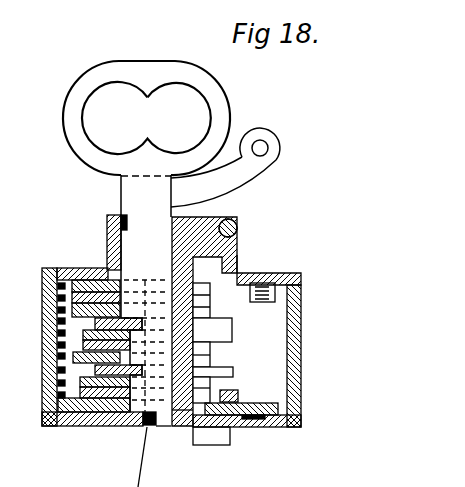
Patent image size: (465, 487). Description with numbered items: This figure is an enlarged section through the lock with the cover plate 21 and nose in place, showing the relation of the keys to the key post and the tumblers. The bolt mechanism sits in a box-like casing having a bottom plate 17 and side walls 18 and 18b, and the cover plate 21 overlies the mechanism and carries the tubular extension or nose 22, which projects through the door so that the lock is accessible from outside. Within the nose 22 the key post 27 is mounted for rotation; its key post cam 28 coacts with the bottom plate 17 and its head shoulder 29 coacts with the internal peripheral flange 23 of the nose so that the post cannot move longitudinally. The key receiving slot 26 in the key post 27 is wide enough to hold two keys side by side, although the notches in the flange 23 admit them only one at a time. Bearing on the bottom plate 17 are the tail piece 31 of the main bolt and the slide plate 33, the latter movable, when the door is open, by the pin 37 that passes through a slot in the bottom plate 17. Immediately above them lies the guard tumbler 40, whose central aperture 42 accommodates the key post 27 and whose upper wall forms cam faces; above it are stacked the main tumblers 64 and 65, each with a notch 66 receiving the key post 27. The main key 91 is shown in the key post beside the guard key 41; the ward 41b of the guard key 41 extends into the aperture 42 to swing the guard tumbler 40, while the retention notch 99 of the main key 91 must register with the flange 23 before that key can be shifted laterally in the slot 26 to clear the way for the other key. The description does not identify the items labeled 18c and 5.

The main key 91 is at (130, 196).
The retention notch 99 is at (128, 221).
The guard key 41 is at (248, 179).
The key ward of guard key 41b is at (140, 400).
The side wall 18 is at (42, 334).
The side wall 18b is at (302, 328).
The casing top 18c is at (74, 140).
The springs 5 is at (58, 355).
The main tumbler 65 is at (58, 368).
The guard tumbler 40 is at (57, 391).
The bottom plate 17 is at (127, 413).
The key post cam 28 is at (108, 427).
The tail piece 31 is at (66, 413).
The key receiving slot 26 is at (150, 427).
The internal peripheral flange 23 is at (227, 217).
The head shoulder 29 is at (238, 235).
The tubular extension (nose) 22 is at (238, 253).
The cover plate 21 is at (276, 276).
The key post 27 is at (182, 417).
The notch 66 is at (207, 372).
The main tumbler 64 is at (225, 373).
The central aperture 42 is at (212, 393).
The slide plate 33 is at (263, 420).
The pin 37 is at (222, 443).